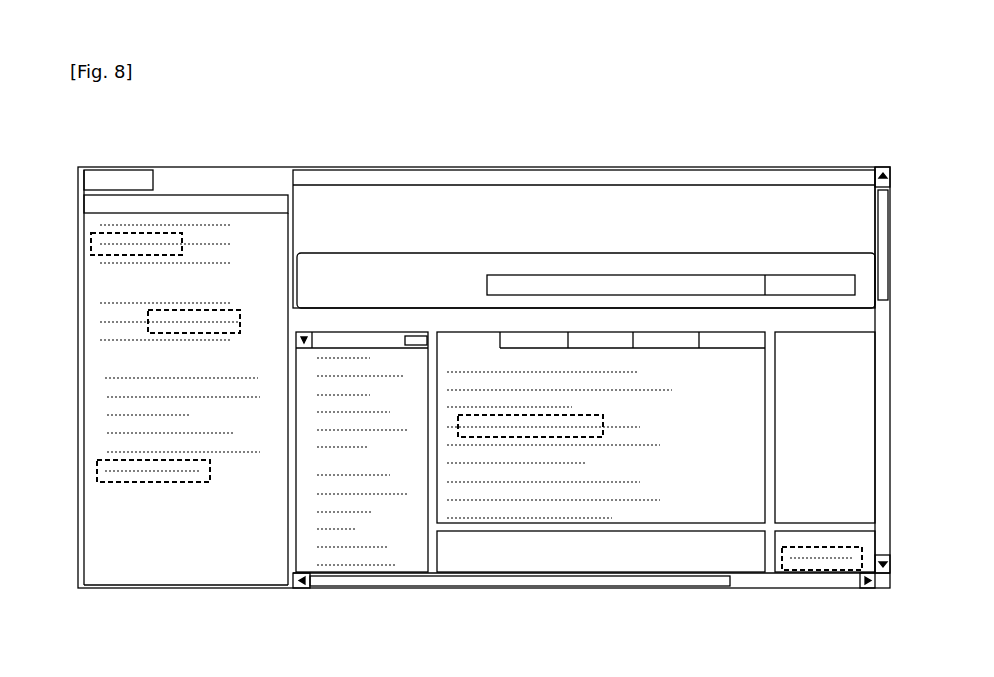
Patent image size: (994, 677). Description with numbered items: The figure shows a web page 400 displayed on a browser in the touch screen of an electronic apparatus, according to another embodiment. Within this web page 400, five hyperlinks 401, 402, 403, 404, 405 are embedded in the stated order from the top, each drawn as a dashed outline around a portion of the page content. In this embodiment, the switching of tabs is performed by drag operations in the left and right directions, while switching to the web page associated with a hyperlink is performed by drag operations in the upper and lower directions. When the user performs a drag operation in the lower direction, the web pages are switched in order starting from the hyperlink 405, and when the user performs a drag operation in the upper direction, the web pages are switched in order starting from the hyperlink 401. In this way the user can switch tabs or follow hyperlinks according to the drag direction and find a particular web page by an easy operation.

The web page 400 is at (808, 167).
The hyperlink 401 is at (162, 232).
The hyperlink 402 is at (238, 318).
The hyperlink 403 is at (518, 438).
The hyperlink 404 is at (167, 483).
The hyperlink 405 is at (765, 575).